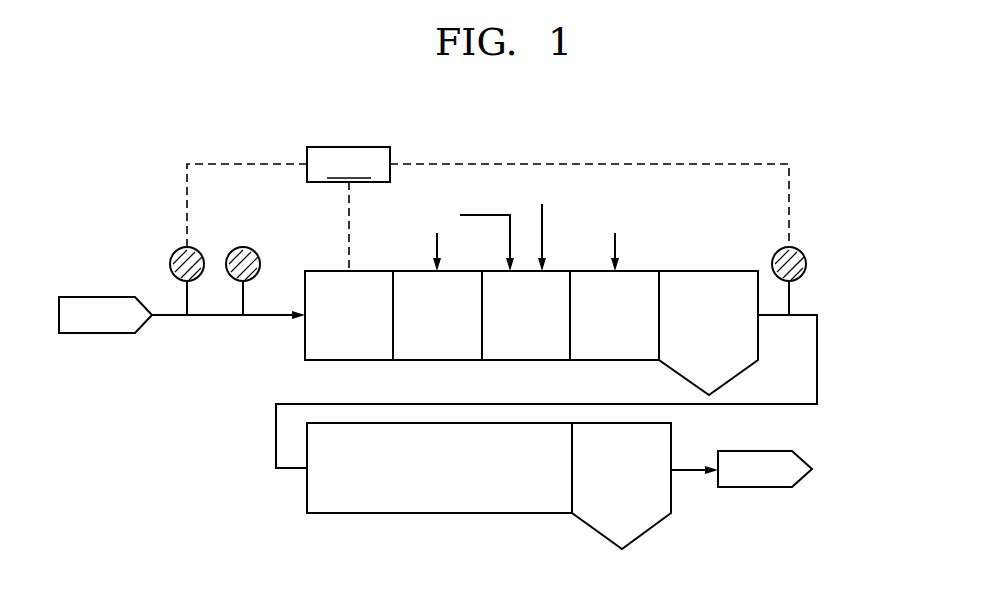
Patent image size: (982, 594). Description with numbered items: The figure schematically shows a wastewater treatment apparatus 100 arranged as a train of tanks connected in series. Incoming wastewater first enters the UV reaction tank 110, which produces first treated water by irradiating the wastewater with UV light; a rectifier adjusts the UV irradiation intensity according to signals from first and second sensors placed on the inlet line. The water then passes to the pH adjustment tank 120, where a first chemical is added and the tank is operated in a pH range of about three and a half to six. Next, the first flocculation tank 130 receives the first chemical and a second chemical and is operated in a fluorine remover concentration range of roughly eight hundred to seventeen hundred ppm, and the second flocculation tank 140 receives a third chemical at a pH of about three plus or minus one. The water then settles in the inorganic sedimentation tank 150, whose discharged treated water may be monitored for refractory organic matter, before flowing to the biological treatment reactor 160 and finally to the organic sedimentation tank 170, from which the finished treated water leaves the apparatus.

The wastewater treatment apparatus 100 is at (781, 141).
The UV reaction tank 110 is at (372, 329).
The pH adjustment tank 120 is at (461, 329).
The first flocculation tank 130 is at (549, 329).
The second flocculation tank 140 is at (638, 329).
The inorganic sedimentation tank 150 is at (732, 329).
The biological treatment reactor 160 is at (461, 484).
The organic sedimentation tank 170 is at (645, 484).